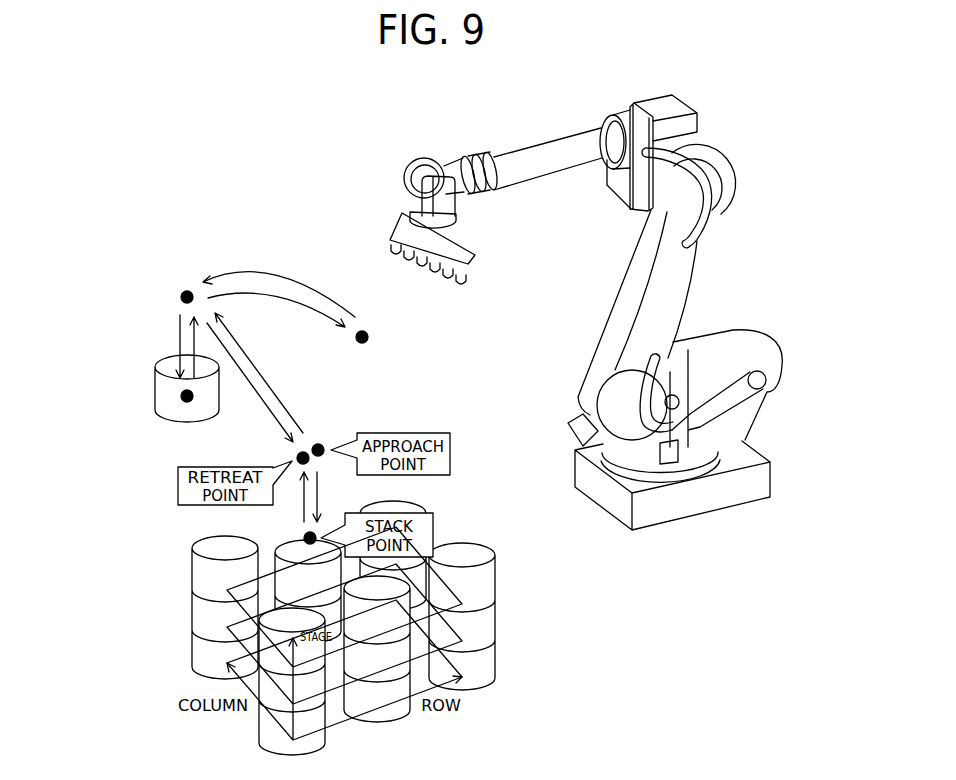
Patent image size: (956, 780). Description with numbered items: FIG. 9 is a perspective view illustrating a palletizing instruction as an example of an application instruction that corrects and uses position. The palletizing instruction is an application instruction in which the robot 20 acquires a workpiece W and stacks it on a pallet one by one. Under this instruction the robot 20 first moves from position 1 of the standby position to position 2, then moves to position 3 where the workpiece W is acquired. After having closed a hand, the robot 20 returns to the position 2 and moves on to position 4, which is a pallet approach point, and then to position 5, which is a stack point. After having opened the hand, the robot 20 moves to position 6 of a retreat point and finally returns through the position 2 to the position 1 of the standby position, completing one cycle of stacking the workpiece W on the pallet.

The robot 20 is at (707, 150).
The position 1 of the standby position 1 is at (370, 338).
The position 2 is at (180, 293).
The position 3 is at (181, 398).
The position 4 (pallet approach point) 4 is at (321, 447).
The position 5 (stack point) 5 is at (307, 537).
The position 6 (retreat point) 6 is at (297, 457).
The workpiece W is at (165, 367).